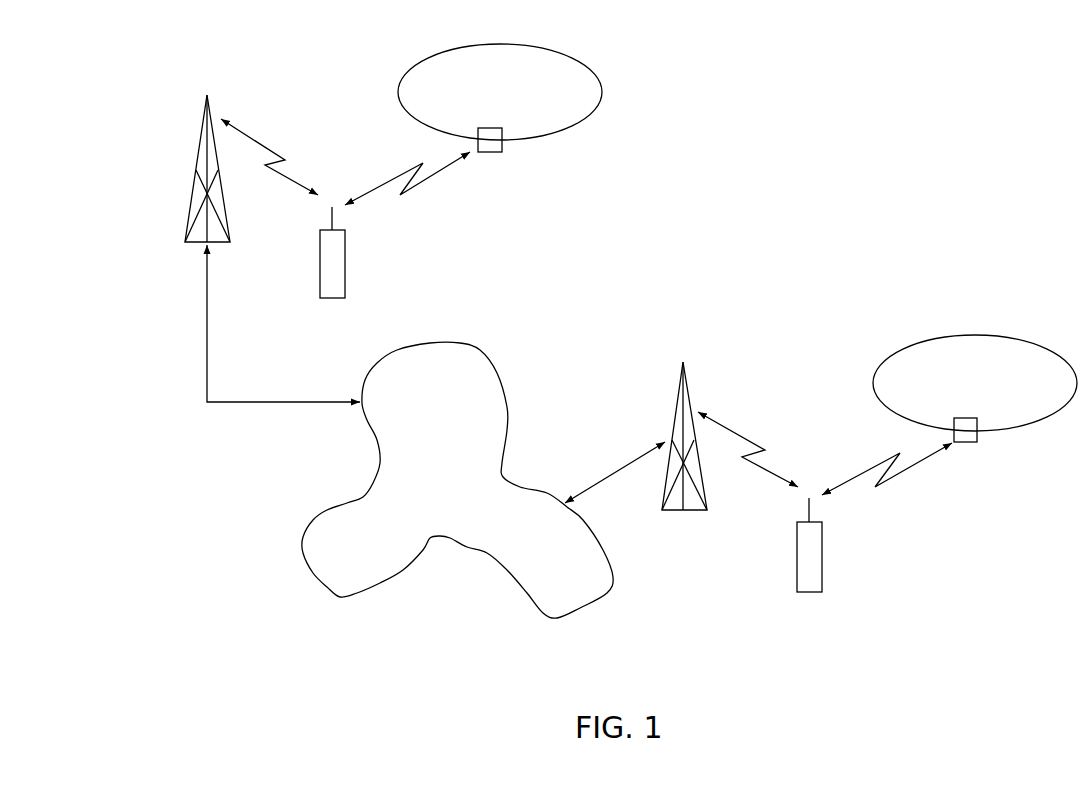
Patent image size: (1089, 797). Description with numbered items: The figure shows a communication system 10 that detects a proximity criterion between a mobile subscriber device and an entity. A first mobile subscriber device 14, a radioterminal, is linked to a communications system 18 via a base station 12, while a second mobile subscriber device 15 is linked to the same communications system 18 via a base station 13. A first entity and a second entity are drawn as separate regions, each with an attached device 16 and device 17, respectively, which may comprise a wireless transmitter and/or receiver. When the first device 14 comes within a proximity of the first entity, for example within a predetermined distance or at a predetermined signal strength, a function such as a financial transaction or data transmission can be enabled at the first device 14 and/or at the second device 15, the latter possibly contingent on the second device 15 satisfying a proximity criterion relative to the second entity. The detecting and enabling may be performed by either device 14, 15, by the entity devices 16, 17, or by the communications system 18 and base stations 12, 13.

The system 10 is at (780, 697).
The base station 12 is at (171, 168).
The base station 13 is at (652, 426).
The mobile subscriber device 14 is at (307, 252).
The mobile subscriber device 15 is at (783, 545).
The device 16 is at (532, 174).
The device 17 is at (1008, 465).
The communications system 18 is at (423, 480).